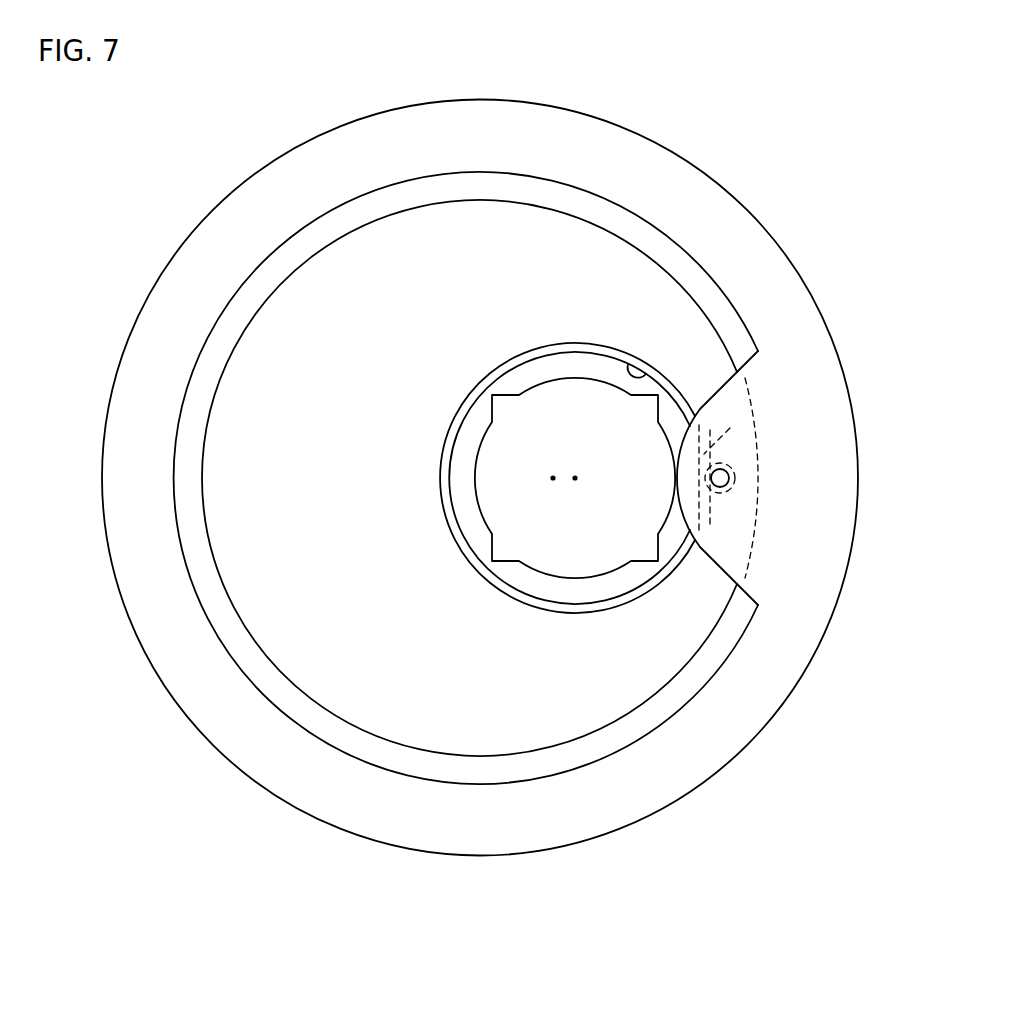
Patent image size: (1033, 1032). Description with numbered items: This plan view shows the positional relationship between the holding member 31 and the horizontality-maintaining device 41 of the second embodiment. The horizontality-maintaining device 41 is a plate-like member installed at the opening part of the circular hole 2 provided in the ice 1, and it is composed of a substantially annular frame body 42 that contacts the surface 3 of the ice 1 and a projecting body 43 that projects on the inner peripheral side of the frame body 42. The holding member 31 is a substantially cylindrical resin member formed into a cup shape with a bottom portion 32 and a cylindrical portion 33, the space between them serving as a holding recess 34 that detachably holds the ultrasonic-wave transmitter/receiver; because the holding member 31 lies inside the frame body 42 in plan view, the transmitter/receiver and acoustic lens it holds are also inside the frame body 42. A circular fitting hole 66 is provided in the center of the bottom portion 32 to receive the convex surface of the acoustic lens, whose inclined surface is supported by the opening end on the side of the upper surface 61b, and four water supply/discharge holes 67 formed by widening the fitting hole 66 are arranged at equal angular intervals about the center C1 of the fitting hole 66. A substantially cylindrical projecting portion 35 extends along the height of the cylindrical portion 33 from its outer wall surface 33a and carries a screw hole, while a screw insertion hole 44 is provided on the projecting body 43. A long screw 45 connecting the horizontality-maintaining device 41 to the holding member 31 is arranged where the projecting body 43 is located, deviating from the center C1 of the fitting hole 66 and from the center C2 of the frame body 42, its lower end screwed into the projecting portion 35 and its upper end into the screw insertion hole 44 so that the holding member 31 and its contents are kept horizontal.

The ice 1 is at (268, 283).
The circular hole 2 is at (204, 498).
The surface 3 is at (233, 337).
The holding member 31 is at (442, 466).
The bottom portion 32 is at (537, 373).
The cylindrical portion 33 is at (585, 343).
The outer wall surface 33a is at (509, 596).
The holding recess 34 is at (637, 371).
The projecting portion 35 is at (728, 478).
The horizontality-maintaining device 41 is at (197, 232).
The frame body 42 is at (709, 778).
The projecting body 43 is at (720, 554).
The screw insertion hole 44 is at (727, 489).
The long screw 45 is at (724, 466).
The upper surface 61b is at (463, 513).
The fitting hole 66 is at (598, 382).
The water supply/discharge holes 67 is at (492, 408).
The center of the fitting hole C1 is at (572, 482).
The center of the frame body C2 is at (550, 481).